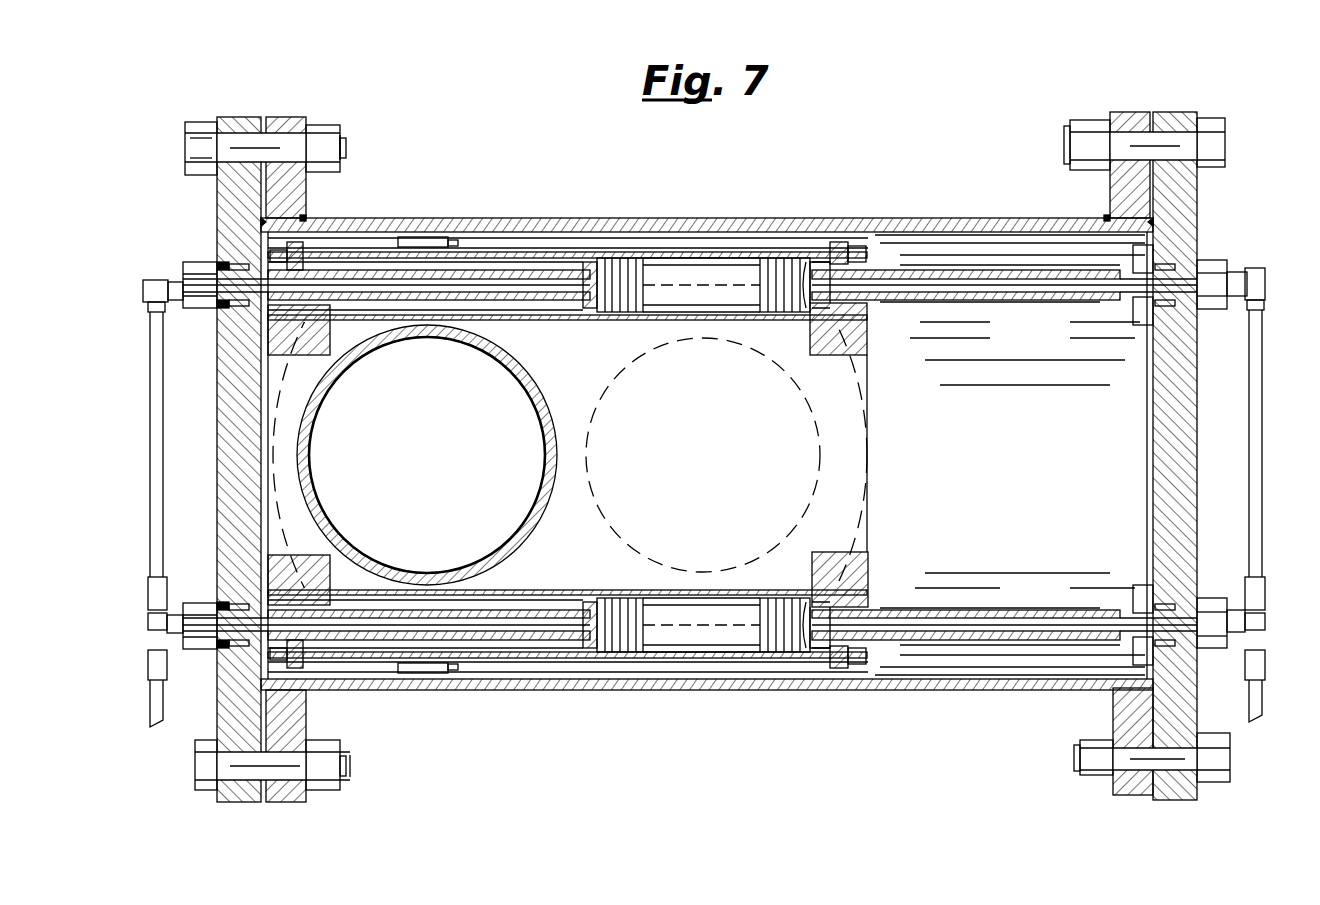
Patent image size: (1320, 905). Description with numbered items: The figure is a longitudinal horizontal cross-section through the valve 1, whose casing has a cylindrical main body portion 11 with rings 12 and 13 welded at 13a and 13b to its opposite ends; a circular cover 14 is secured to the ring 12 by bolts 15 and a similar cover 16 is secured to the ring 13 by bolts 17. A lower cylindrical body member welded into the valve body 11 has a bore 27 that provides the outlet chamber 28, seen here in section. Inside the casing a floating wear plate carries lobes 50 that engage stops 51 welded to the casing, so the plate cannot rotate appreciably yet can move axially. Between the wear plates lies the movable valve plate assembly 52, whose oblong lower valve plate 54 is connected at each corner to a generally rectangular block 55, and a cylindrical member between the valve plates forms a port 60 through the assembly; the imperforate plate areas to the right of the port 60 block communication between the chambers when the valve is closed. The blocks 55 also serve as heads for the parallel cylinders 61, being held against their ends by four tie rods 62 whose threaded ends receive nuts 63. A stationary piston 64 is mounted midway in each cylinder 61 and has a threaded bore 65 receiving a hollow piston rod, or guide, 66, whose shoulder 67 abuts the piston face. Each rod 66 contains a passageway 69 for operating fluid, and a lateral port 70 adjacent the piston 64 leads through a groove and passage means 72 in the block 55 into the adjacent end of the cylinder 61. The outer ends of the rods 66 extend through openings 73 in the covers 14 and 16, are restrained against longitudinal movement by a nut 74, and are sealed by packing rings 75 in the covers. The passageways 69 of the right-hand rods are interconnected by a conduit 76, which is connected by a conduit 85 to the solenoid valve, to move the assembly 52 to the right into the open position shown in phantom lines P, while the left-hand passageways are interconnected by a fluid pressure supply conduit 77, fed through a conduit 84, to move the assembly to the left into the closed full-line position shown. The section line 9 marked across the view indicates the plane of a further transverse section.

The valve 1 is at (905, 215).
The section line 9- 9 is at (703, 280).
The cylindrical main body portion 11 is at (1002, 218).
The ring 12 is at (283, 117).
The ring 13 is at (1128, 112).
The weld 13a is at (305, 218).
The weld 13b is at (258, 221).
The circular cover 14 is at (250, 117).
The bolts 15 is at (343, 148).
The cover 16 is at (1172, 112).
The bolts 17 is at (1212, 140).
The bore 27 is at (780, 548).
The outlet chamber 28 is at (678, 465).
The lobes 50 is at (437, 237).
The stops 51 is at (455, 240).
The valve plate assembly 52 is at (871, 429).
The lower valve plate 54 is at (870, 386).
The block 55 is at (335, 350).
The port 60 is at (540, 432).
The cylinders 61 is at (505, 252).
The tie rods 62 is at (868, 256).
The nuts 63 is at (866, 328).
The stationary piston 64 is at (712, 258).
The threaded bore 65 is at (780, 255).
The hollow piston rod 66 is at (178, 282).
The shoulder 67 is at (808, 305).
The passageway 69 is at (520, 300).
The lateral port 70 is at (586, 268).
The passage means 72 is at (312, 250).
The openings 73 is at (232, 268).
The nut 74 is at (200, 262).
The packing rings 75 is at (238, 302).
The conduit 76 is at (1262, 430).
The fluid pressure supply conduit 77 is at (155, 505).
The conduit 84 is at (152, 720).
The conduit 85 is at (1265, 700).
The phantom lines P is at (1145, 448).